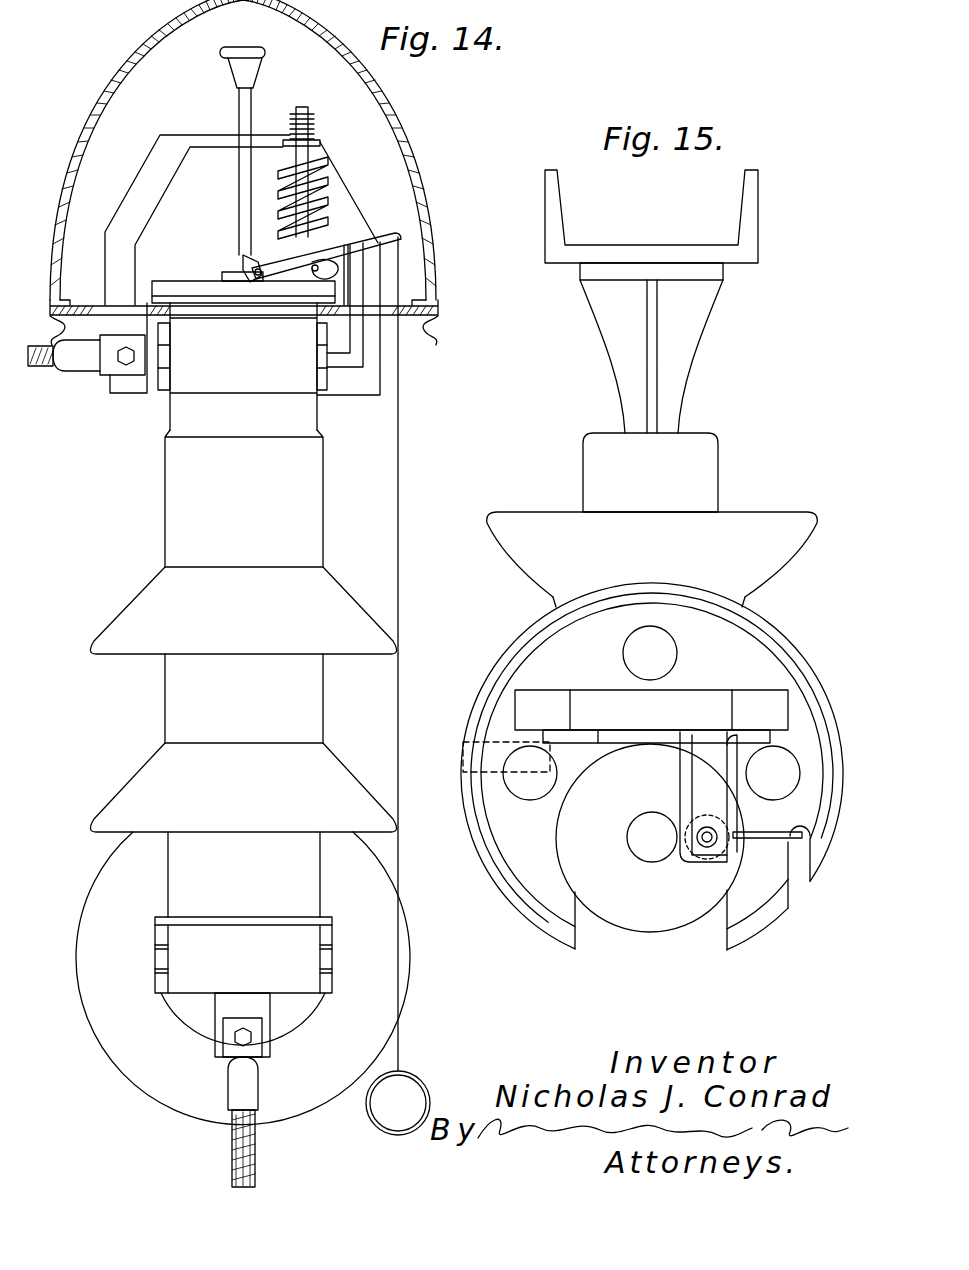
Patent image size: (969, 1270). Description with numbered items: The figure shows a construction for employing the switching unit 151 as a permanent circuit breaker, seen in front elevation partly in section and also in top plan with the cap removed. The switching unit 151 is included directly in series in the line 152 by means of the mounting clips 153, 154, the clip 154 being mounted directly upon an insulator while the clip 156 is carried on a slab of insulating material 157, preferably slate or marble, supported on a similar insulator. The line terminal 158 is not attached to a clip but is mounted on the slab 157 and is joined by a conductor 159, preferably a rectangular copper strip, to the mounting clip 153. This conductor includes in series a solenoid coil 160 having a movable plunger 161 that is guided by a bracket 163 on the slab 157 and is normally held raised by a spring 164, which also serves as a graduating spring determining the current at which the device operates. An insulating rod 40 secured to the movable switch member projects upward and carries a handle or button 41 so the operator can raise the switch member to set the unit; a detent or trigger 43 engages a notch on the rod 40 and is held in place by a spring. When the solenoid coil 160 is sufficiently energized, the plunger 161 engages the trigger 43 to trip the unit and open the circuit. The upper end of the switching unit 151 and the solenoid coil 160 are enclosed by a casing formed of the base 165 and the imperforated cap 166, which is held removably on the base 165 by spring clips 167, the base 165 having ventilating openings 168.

In FIG. 14, the rod 40 is at (245, 206).
In FIG. 14, the handle or button 41 is at (265, 51).
In FIG. 14, the detent or trigger 43 is at (357, 247).
In FIG. 14, the switching unit 151 is at (170, 500).
In FIG. 14, the line 152 is at (40, 370).
In FIG. 14, the mounting clip 153 is at (160, 388).
In FIG. 14, the mounting clip 154 is at (160, 957).
In FIG. 14, the clip 156 is at (108, 892).
In FIG. 14, the slab of insulating material 157 is at (366, 378).
In FIG. 14, the line terminal 158 is at (110, 378).
In FIG. 14, the conductor 159 is at (173, 197).
In FIG. 14, the solenoid coil 160 is at (315, 186).
In FIG. 15, the solenoid coil 160 is at (700, 858).
In FIG. 14, the movable plunger 161 is at (336, 172).
In FIG. 14, the bracket 163 is at (288, 138).
In FIG. 14, the spring 164 is at (313, 124).
In FIG. 14, the base 165 is at (405, 317).
In FIG. 15, the base 165 is at (750, 658).
In FIG. 14, the cap 166 is at (425, 231).
In FIG. 14, the spring clips 167 is at (439, 310).
In FIG. 15, the ventilating openings 168 is at (531, 782).